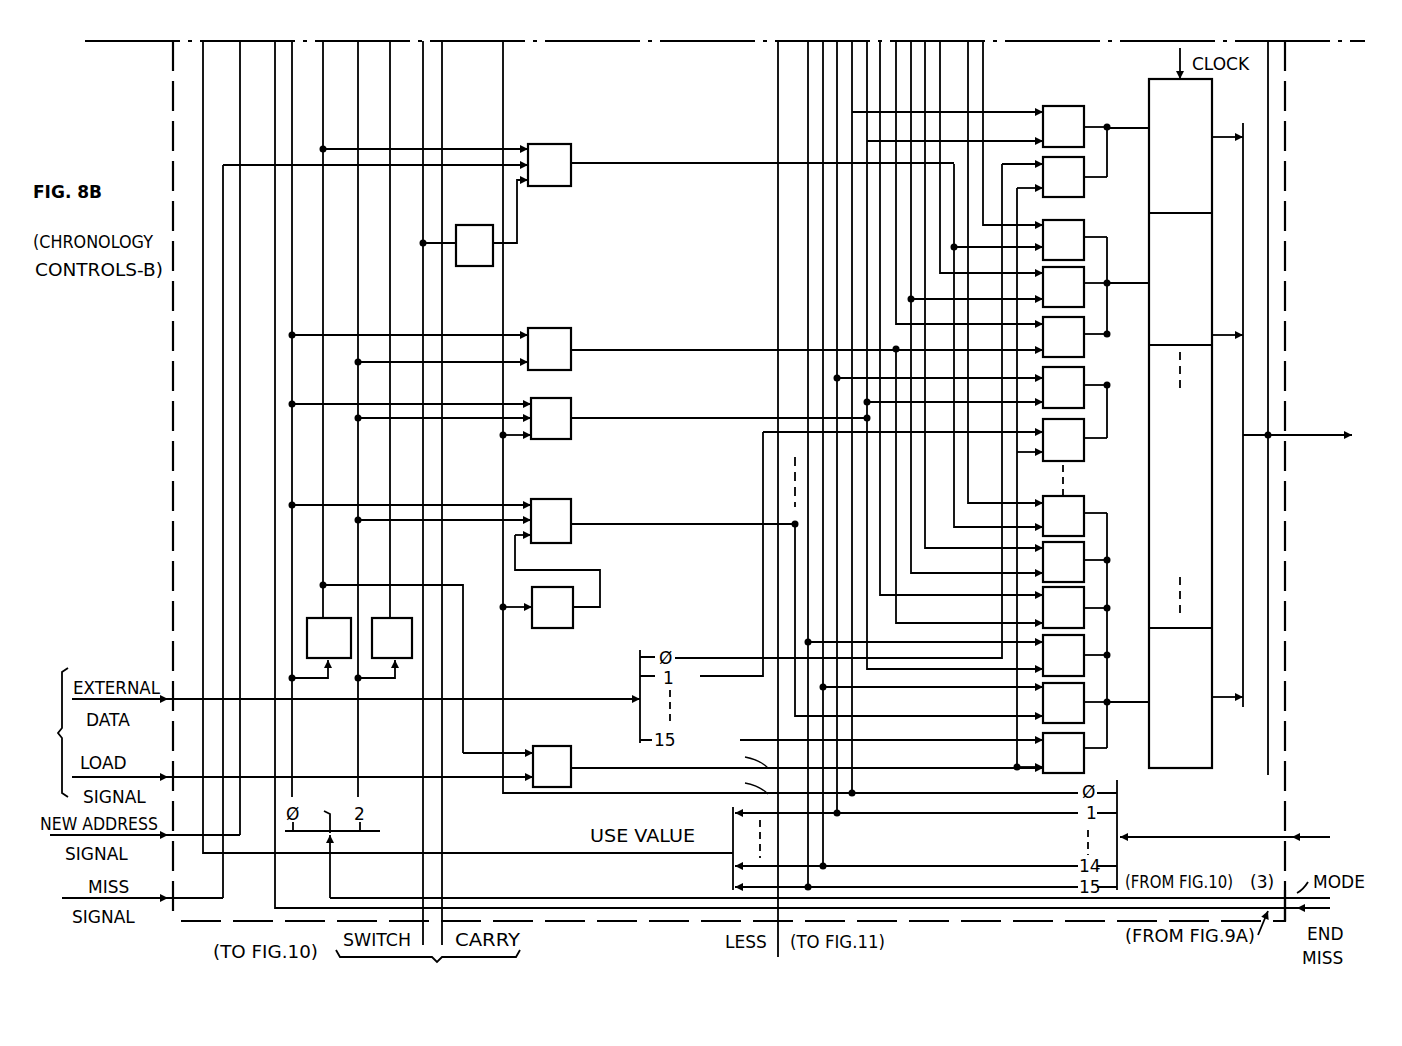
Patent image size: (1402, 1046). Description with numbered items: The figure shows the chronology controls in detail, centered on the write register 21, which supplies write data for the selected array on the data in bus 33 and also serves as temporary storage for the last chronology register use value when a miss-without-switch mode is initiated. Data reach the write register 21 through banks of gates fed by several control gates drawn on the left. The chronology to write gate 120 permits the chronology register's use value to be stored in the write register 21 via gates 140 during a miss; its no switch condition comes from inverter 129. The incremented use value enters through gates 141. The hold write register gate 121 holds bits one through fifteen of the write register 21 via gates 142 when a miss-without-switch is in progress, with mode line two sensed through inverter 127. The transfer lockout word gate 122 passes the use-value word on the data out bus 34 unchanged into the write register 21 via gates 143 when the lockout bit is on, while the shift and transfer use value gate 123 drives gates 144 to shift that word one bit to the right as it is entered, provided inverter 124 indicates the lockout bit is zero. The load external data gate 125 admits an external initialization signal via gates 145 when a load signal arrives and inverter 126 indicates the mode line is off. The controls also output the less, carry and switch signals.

The chronology to write gate 120 is at (562, 143).
The hold write register gate 121 is at (562, 328).
The transfer lockout word gate 122 is at (571, 428).
The shift and transfer use value gate 123 is at (560, 499).
The inverter 124 is at (573, 618).
The load external data gate 125 is at (570, 746).
The inverter 126 is at (310, 618).
The inverter 127 is at (408, 618).
The inverter 129 is at (480, 266).
The gates 140 is at (1083, 228).
The gates 141 is at (1080, 280).
The gates 142 is at (1083, 326).
The gates 143 is at (1082, 112).
The gates 144 is at (1083, 693).
The gates 145 is at (1080, 185).
The write register 21 is at (1200, 748).
The data in bus 33 is at (1305, 440).
The data out bus 34 is at (1322, 838).